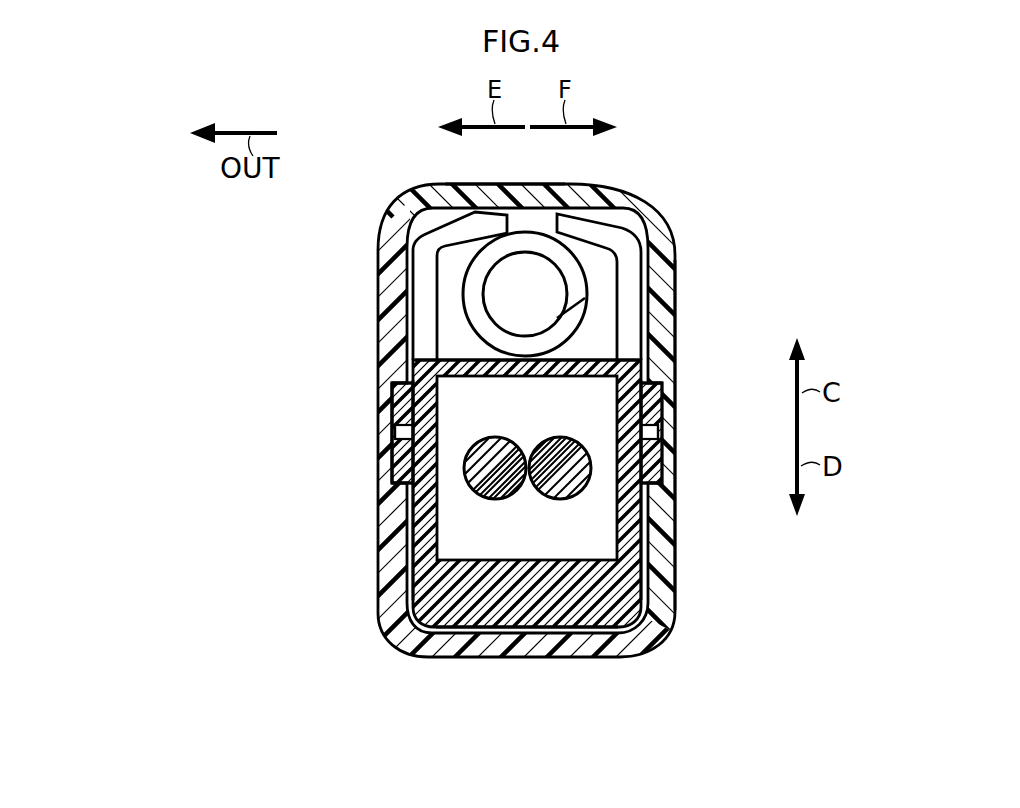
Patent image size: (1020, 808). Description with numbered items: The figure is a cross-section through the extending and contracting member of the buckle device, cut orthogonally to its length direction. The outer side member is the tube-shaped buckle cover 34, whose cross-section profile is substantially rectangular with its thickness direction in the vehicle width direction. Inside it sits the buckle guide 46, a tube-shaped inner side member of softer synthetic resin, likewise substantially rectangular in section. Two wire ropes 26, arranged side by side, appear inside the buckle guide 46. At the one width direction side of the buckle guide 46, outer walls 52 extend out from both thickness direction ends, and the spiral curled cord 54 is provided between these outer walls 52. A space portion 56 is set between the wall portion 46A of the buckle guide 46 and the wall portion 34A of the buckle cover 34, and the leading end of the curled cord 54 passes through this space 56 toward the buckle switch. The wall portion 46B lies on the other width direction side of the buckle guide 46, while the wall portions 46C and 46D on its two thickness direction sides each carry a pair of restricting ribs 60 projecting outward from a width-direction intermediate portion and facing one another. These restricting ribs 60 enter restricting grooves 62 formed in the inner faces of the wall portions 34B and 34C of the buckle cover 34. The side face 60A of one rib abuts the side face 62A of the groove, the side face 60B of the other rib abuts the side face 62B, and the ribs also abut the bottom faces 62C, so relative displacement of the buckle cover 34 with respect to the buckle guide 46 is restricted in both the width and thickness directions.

The wire rope 26 is at (492, 499).
The buckle cover 34 is at (683, 246).
The wall portion 34A is at (512, 183).
The wall portion 34B is at (382, 531).
The wall portion 34C is at (677, 552).
The buckle guide 46 is at (645, 570).
The wall portion 46A is at (580, 360).
The wall portion 46B is at (518, 629).
The wall portion 46C is at (415, 545).
The wall portion 46D is at (650, 528).
The outer wall 52 is at (424, 285).
The curled cord 54 is at (543, 243).
The space portion 56 is at (447, 318).
The restricting rib 60 is at (392, 420).
The one width direction side face 60A is at (402, 377).
The another width direction side face 60B is at (402, 494).
The restricting groove 62 is at (437, 460).
The one width direction side face 62A is at (392, 403).
The another width direction side face 62B is at (395, 478).
The bottom face 62C is at (436, 405).